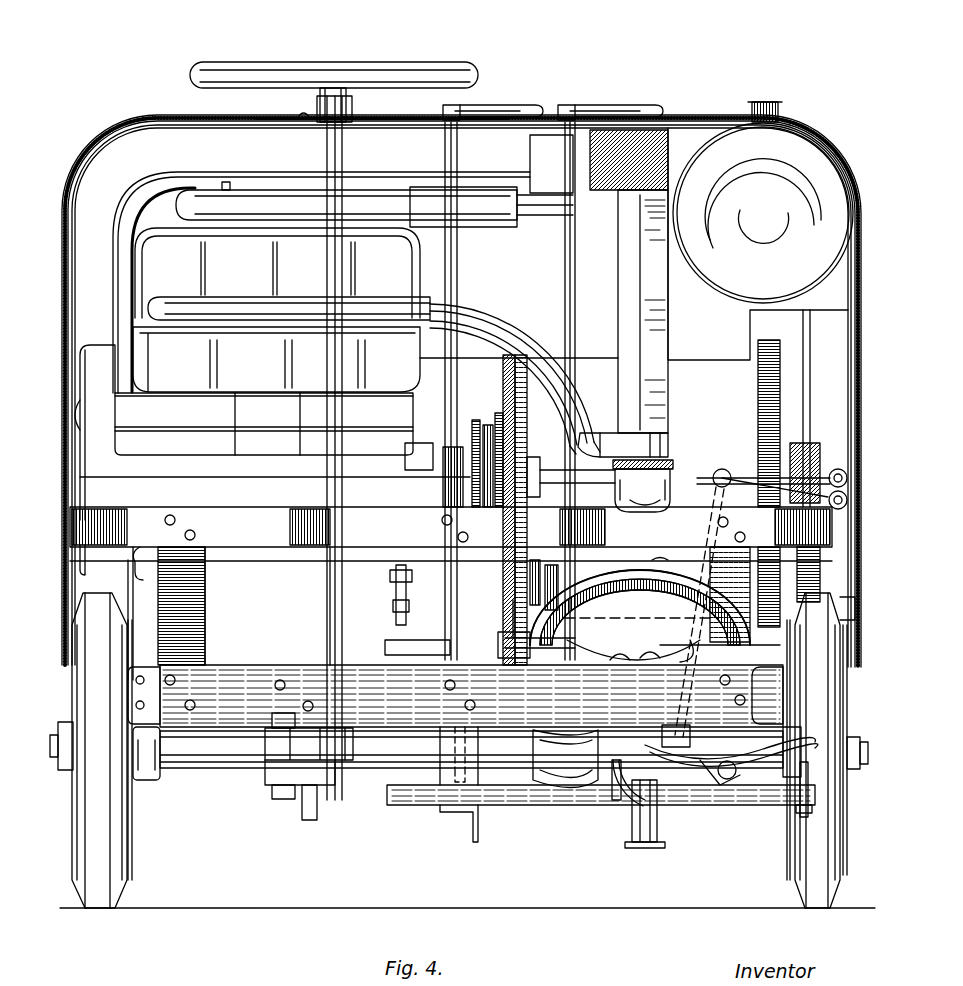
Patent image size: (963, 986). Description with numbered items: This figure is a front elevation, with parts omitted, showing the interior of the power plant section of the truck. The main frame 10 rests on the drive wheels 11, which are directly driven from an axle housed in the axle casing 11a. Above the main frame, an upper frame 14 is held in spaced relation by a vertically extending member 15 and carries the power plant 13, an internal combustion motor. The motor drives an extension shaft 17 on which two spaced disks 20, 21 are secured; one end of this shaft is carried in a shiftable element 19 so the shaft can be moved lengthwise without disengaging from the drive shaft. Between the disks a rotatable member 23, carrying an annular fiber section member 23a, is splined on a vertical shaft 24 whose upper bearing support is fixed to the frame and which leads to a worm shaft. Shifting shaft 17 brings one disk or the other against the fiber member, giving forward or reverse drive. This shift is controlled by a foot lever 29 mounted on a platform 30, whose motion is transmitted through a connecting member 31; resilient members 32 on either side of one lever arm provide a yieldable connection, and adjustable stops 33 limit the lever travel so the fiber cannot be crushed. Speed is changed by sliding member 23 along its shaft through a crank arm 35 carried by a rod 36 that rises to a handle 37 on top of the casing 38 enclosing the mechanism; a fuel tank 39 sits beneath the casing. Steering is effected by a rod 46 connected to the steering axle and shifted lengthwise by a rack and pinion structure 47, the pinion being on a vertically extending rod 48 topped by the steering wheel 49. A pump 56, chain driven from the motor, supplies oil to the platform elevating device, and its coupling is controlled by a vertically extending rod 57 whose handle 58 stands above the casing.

The frame 10 is at (455, 696).
The drive wheels 11 is at (100, 844).
The axle casing 11a is at (218, 760).
The power plant 13 is at (252, 273).
The upper frame 14 is at (258, 530).
The vertically extending member 15 is at (195, 644).
The shaft 17 is at (697, 475).
The shiftable element 19 is at (829, 448).
The disk 20 is at (497, 396).
The disk 21 is at (765, 400).
The rotatable member 23 is at (603, 580).
The annular fiber section member 23a is at (662, 560).
The shaft 24 is at (650, 508).
The foot lever 29 is at (705, 795).
The platform 30 is at (535, 795).
The connecting member 31 is at (722, 648).
The resilient members 32 is at (687, 730).
The adjustable stops 33 is at (618, 785).
The crank arm 35 is at (550, 648).
The rod 36 is at (572, 280).
The handle 37 is at (618, 106).
The casing 38 is at (145, 115).
The fuel tank 39 is at (763, 202).
The rod 46 is at (303, 808).
The rack and pinion structure 47 is at (350, 785).
The vertically extending rod 48 is at (328, 262).
The steering wheel 49 is at (388, 66).
The pump 56 is at (400, 635).
The vertically extending rod 57 is at (456, 274).
The handle 58 is at (500, 106).